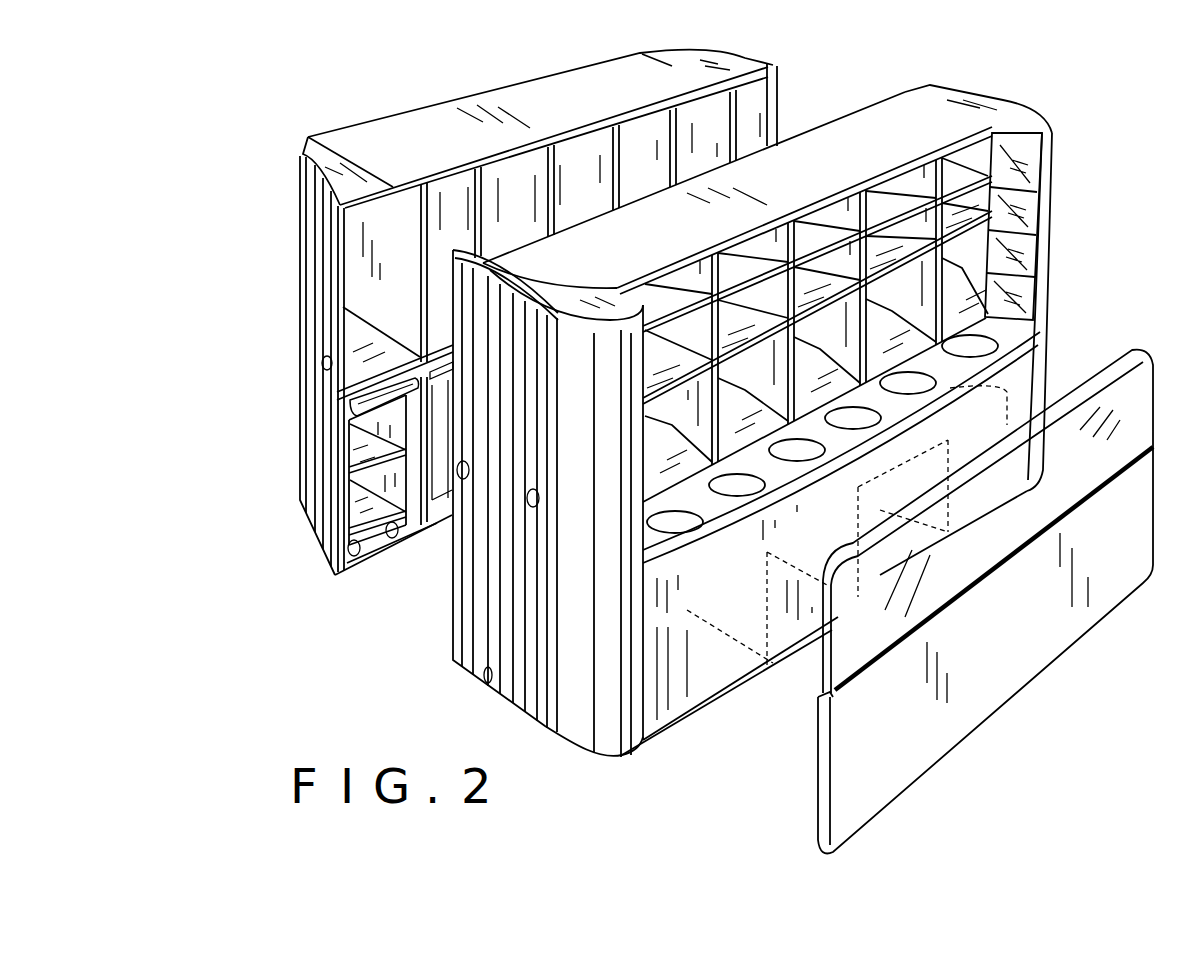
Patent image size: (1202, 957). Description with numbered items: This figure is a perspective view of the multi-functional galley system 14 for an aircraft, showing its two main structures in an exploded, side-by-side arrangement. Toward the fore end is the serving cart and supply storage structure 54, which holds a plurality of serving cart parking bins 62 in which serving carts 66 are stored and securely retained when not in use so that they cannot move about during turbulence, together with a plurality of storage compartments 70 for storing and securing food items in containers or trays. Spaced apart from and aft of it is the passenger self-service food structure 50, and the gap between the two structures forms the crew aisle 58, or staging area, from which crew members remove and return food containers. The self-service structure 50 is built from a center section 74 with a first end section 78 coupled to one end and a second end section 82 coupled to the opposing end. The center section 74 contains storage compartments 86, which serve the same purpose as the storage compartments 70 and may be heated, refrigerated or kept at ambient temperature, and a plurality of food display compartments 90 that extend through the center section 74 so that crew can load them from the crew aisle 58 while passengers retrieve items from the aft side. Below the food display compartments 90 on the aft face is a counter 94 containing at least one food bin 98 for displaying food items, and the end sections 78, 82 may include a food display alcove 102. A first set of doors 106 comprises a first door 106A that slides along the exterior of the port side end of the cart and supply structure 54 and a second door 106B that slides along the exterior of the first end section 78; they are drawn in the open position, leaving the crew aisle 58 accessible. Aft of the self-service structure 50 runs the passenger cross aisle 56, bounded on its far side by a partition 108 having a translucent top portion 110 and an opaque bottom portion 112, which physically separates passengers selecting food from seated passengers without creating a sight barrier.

The multi-functional galley system 14 is at (357, 103).
The serving cart and supply storage structure 54 is at (758, 45).
The storage compartments 70 is at (380, 239).
The first end section 78 is at (483, 295).
The first door 106A is at (322, 300).
The first set of doors 106 is at (313, 594).
The serving carts 66 is at (348, 440).
The serving cart parking bins 62 is at (380, 540).
The second door 106B is at (480, 688).
The crew aisle 58 is at (448, 578).
The passenger self-service food structure 50 is at (988, 82).
The center section 74 is at (860, 140).
The second end section 82 is at (940, 98).
The food display compartments 90 is at (646, 308).
The food display alcove 102 is at (1032, 172).
The counter 94 is at (993, 313).
The food bin 98 is at (665, 531).
The passenger cross aisle 56 is at (744, 772).
The storage compartments 86 is at (975, 395).
The translucent top portion 110 is at (1148, 345).
The partition 108 is at (817, 777).
The opaque bottom portion 112 is at (965, 665).